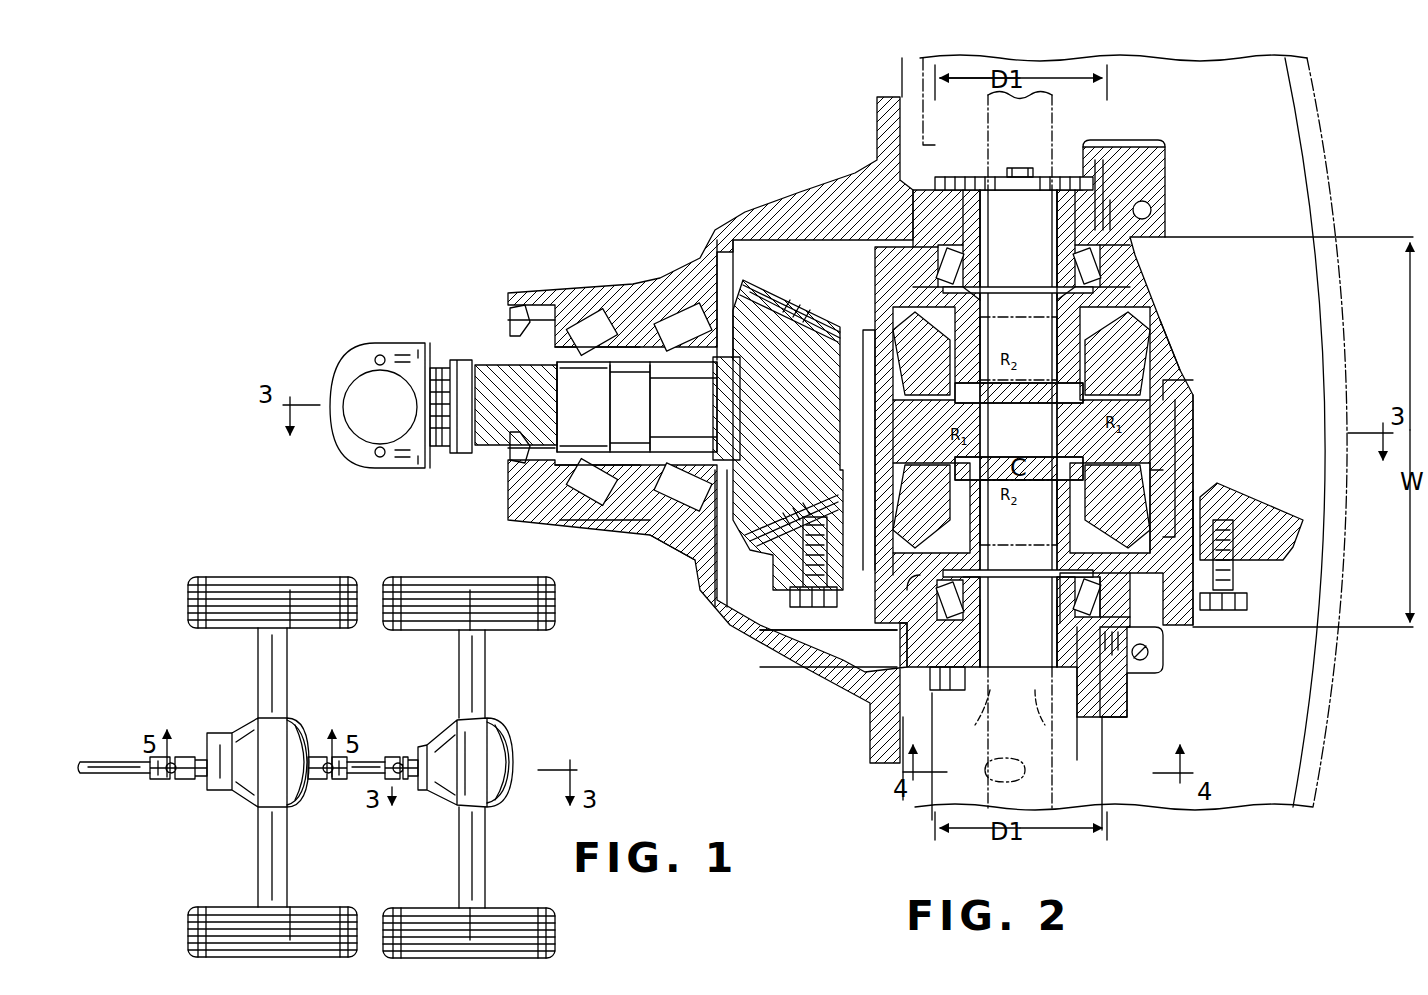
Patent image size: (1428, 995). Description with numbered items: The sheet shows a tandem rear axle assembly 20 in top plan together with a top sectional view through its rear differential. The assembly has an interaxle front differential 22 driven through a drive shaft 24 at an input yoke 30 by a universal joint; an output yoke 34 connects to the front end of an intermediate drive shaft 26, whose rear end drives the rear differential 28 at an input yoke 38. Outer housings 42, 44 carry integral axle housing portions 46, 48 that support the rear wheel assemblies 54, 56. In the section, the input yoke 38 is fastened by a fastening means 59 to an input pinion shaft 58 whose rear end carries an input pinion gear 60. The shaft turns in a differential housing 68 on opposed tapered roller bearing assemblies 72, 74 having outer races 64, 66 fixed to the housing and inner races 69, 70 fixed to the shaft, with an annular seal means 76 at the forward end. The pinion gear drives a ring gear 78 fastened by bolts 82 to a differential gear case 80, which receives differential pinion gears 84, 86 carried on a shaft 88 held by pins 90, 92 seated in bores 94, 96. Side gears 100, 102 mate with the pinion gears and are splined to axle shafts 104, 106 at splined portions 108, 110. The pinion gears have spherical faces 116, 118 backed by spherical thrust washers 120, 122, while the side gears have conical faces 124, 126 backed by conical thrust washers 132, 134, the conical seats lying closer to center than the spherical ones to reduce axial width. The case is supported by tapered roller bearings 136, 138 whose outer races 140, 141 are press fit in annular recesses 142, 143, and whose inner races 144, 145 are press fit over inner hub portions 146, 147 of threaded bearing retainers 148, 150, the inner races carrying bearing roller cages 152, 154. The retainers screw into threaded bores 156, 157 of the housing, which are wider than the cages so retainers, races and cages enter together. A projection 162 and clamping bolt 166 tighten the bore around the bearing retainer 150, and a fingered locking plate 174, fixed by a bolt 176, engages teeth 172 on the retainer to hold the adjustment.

In FIG. 1, the tandem rear axle assembly 20 is at (186, 690).
In FIG. 1, the interaxle front differential 22 is at (245, 722).
In FIG. 1, the drive shaft 24 is at (97, 772).
In FIG. 1, the intermediate drive shaft 26 is at (365, 762).
In FIG. 1, the rear differential 28 is at (515, 740).
In FIG. 2, the rear differential 28 is at (706, 162).
In FIG. 1, the input yoke 30 is at (170, 780).
In FIG. 1, the output yoke 34 is at (322, 780).
In FIG. 1, the input yoke 38 is at (398, 760).
In FIG. 2, the input yoke 38 is at (395, 355).
In FIG. 1, the outer housing 42 is at (297, 730).
In FIG. 1, the outer housing 44 is at (508, 782).
In FIG. 1, the axle housing portions 46 is at (288, 664).
In FIG. 1, the axle housing portions 48 is at (478, 662).
In FIG. 1, the rear wheel assemblies 54 is at (232, 580).
In FIG. 1, the rear wheel assemblies 56 is at (550, 618).
In FIG. 2, the input pinion shaft 58 is at (497, 378).
In FIG. 2, the fastening means 59 is at (440, 468).
In FIG. 2, the input pinion gear 60 is at (770, 322).
In FIG. 2, the outer race 64 is at (622, 508).
In FIG. 2, the outer race 66 is at (665, 522).
In FIG. 2, the differential housing 68 is at (795, 192).
In FIG. 2, the inner race 69 is at (578, 352).
In FIG. 2, the inner race 70 is at (692, 352).
In FIG. 2, the tapered roller bearing assembly 72 is at (567, 318).
In FIG. 2, the tapered roller bearing assembly 74 is at (645, 302).
In FIG. 2, the annular seal means 76 is at (498, 338).
In FIG. 2, the ring gear 78 is at (1298, 485).
In FIG. 2, the differential gear case 80 is at (1147, 335).
In FIG. 2, the bolts 82 is at (798, 592).
In FIG. 2, the differential pinion gear 84 is at (872, 385).
In FIG. 2, the differential pinion gear 86 is at (1166, 366).
In FIG. 2, the shaft 88 is at (1197, 425).
In FIG. 2, the pin 90 is at (866, 395).
In FIG. 2, the pin 92 is at (1187, 393).
In FIG. 2, the bore 94 is at (872, 600).
In FIG. 2, the bore 96 is at (1250, 503).
In FIG. 2, the side gear 100 is at (1000, 380).
In FIG. 2, the side gear 102 is at (1105, 475).
In FIG. 2, the axle shaft 104 is at (987, 140).
In FIG. 2, the axle shaft 106 is at (1015, 778).
In FIG. 2, the splined portion 108 is at (1021, 360).
In FIG. 2, the splined portion 110 is at (1021, 501).
In FIG. 2, the spherical face 116 is at (935, 500).
In FIG. 2, the spherical face 118 is at (1142, 478).
In FIG. 2, the spherical thrust washer 120 is at (902, 548).
In FIG. 2, the spherical thrust washer 122 is at (1152, 475).
In FIG. 2, the conical face 124 is at (1122, 306).
In FIG. 2, the conical face 126 is at (1118, 606).
In FIG. 2, the conical thrust washer 132 is at (985, 334).
In FIG. 2, the conical thrust washer 134 is at (976, 528).
In FIG. 2, the tapered roller bearing 136 is at (1060, 258).
In FIG. 2, the tapered roller bearing 138 is at (1075, 632).
In FIG. 2, the outer race 140 is at (1135, 252).
In FIG. 2, the outer race 141 is at (1105, 612).
In FIG. 2, the annular recess 142 is at (932, 592).
In FIG. 2, the annular recess 143 is at (1142, 288).
In FIG. 2, the inner race 144 is at (1068, 262).
In FIG. 2, the inner race 145 is at (1078, 604).
In FIG. 2, the inner hub portion 146 is at (1060, 284).
In FIG. 2, the inner hub portion 147 is at (1062, 588).
In FIG. 2, the bearing retainer 148 is at (1060, 185).
In FIG. 2, the bearing retainer 150 is at (1097, 672).
In FIG. 2, the bearing roller cage 152 is at (1105, 272).
In FIG. 2, the bearing roller cage 154 is at (1102, 600).
In FIG. 2, the threaded bore 156 is at (948, 200).
In FIG. 2, the threaded bore 157 is at (945, 685).
In FIG. 2, the projection 162 is at (1165, 655).
In FIG. 2, the clamping bolt 166 is at (1147, 660).
In FIG. 2, the teeth 172 is at (1080, 718).
In FIG. 2, the fingered locking plate 174 is at (1033, 720).
In FIG. 2, the bolt 176 is at (990, 722).